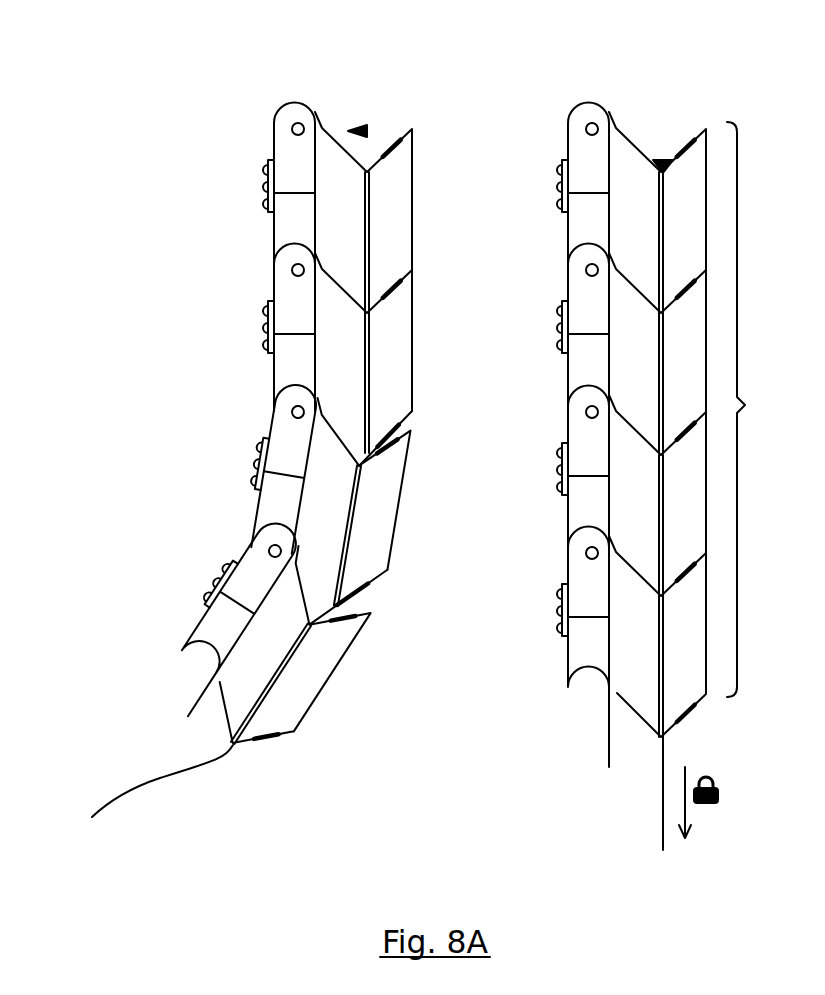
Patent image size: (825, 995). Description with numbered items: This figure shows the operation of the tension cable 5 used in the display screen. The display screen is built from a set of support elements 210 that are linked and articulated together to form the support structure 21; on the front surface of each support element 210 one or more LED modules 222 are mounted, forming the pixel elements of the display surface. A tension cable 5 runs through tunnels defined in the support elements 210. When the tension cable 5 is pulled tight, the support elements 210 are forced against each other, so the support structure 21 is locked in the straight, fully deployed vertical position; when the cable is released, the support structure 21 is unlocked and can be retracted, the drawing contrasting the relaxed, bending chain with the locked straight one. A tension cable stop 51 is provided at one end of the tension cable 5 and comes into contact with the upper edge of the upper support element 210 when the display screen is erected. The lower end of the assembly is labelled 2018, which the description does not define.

The tension cable 5 is at (662, 834).
The support structure 21 is at (756, 409).
The tension cable stop 51 is at (663, 160).
The support element 210 is at (305, 686).
The LED module 222 is at (214, 586).
The end strip 2018 is at (608, 748).